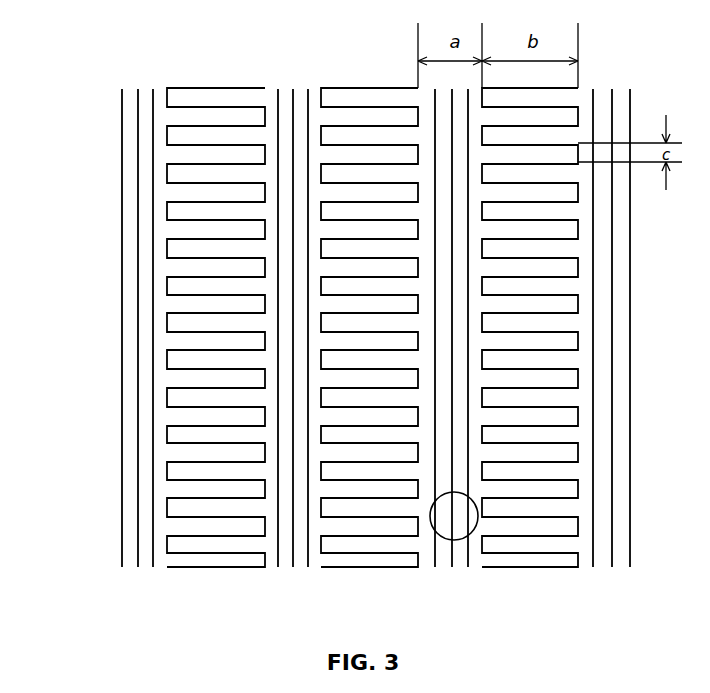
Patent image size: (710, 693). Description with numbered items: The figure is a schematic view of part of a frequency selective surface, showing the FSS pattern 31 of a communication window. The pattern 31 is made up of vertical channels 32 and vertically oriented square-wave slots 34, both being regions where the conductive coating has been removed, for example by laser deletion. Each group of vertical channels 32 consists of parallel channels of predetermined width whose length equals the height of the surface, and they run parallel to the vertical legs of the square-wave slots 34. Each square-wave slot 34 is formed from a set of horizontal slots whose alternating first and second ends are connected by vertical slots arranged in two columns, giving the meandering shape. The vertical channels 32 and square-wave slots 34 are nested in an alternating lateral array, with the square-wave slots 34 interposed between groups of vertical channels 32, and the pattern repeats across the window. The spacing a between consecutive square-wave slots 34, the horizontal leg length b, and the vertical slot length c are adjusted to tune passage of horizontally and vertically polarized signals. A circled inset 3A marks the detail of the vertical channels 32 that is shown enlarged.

The FSS pattern 31 is at (118, 235).
The vertical channels 32 is at (138, 88).
The square-wave slots 34 is at (213, 82).
The inset 3A is at (460, 540).